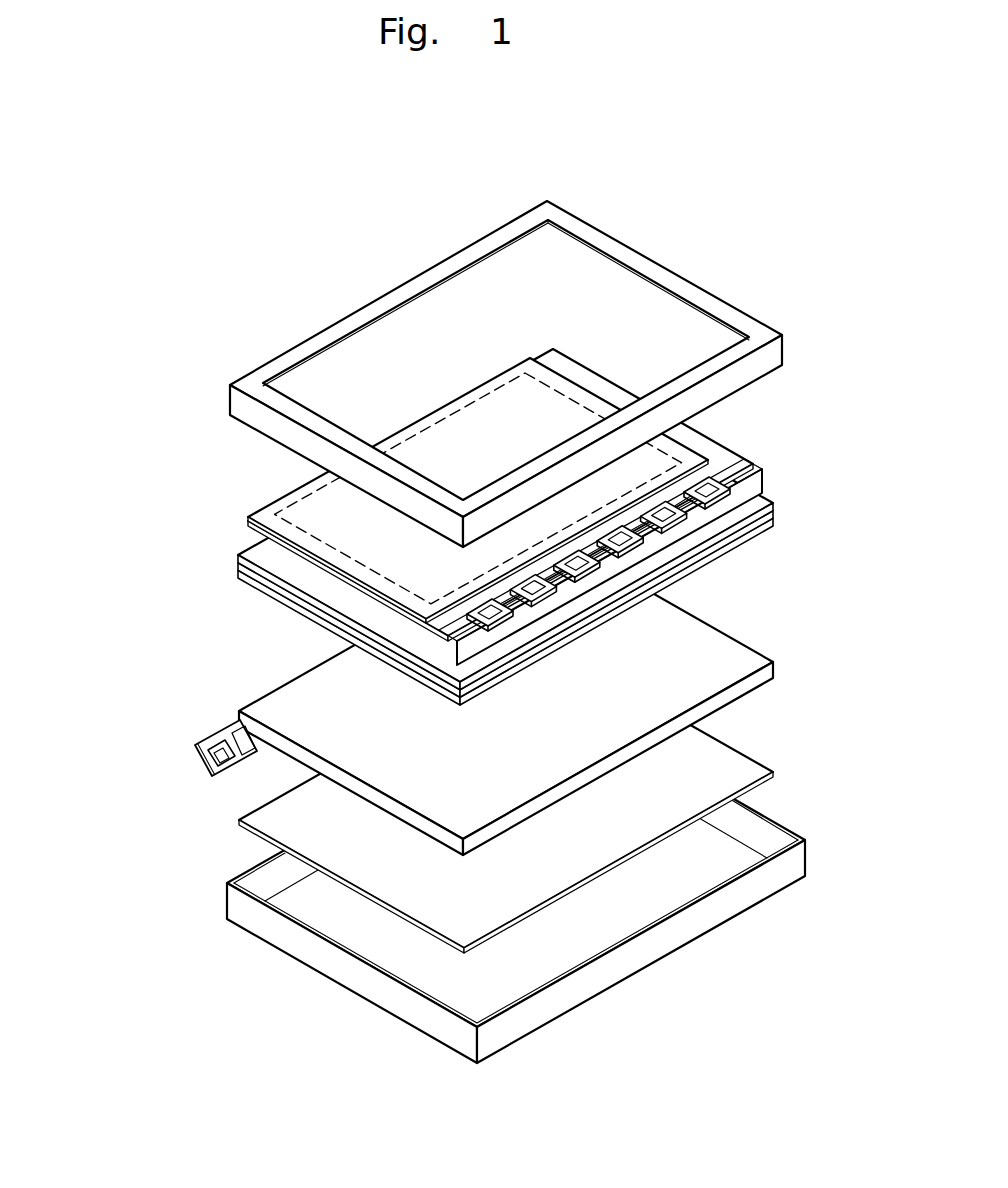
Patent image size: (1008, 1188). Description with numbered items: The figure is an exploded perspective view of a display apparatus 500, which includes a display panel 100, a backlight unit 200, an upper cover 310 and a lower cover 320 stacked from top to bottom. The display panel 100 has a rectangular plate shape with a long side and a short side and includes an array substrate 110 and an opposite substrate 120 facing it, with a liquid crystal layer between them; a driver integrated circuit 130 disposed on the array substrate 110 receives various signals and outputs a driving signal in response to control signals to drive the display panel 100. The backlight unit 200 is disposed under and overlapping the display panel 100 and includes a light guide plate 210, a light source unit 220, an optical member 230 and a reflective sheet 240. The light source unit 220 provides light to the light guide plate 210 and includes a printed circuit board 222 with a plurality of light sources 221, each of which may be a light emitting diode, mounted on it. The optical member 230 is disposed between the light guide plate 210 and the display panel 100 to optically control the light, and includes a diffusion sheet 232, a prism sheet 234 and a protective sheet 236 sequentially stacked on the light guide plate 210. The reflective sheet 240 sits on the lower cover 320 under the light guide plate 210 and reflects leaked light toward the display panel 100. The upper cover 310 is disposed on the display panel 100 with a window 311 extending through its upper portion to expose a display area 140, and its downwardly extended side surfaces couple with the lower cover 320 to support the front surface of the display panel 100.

The display apparatus 500 is at (714, 241).
The upper cover 310 is at (497, 374).
The window 311 is at (438, 328).
The display panel 100 is at (543, 507).
The array substrate 110 is at (722, 460).
The opposite substrate 120 is at (687, 462).
The driver integrated circuit 130 is at (722, 472).
The display area 140 is at (302, 503).
The backlight unit 200 is at (398, 665).
The light guide plate 210 is at (283, 683).
The light source unit 220 is at (167, 743).
The light source 221 is at (206, 750).
The printed circuit board 222 is at (222, 733).
The optical member 230 is at (425, 541).
The diffusion sheet 232 is at (237, 571).
The prism sheet 234 is at (237, 564).
The protective sheet 236 is at (237, 558).
The reflective sheet 240 is at (236, 820).
The lower cover 320 is at (225, 898).